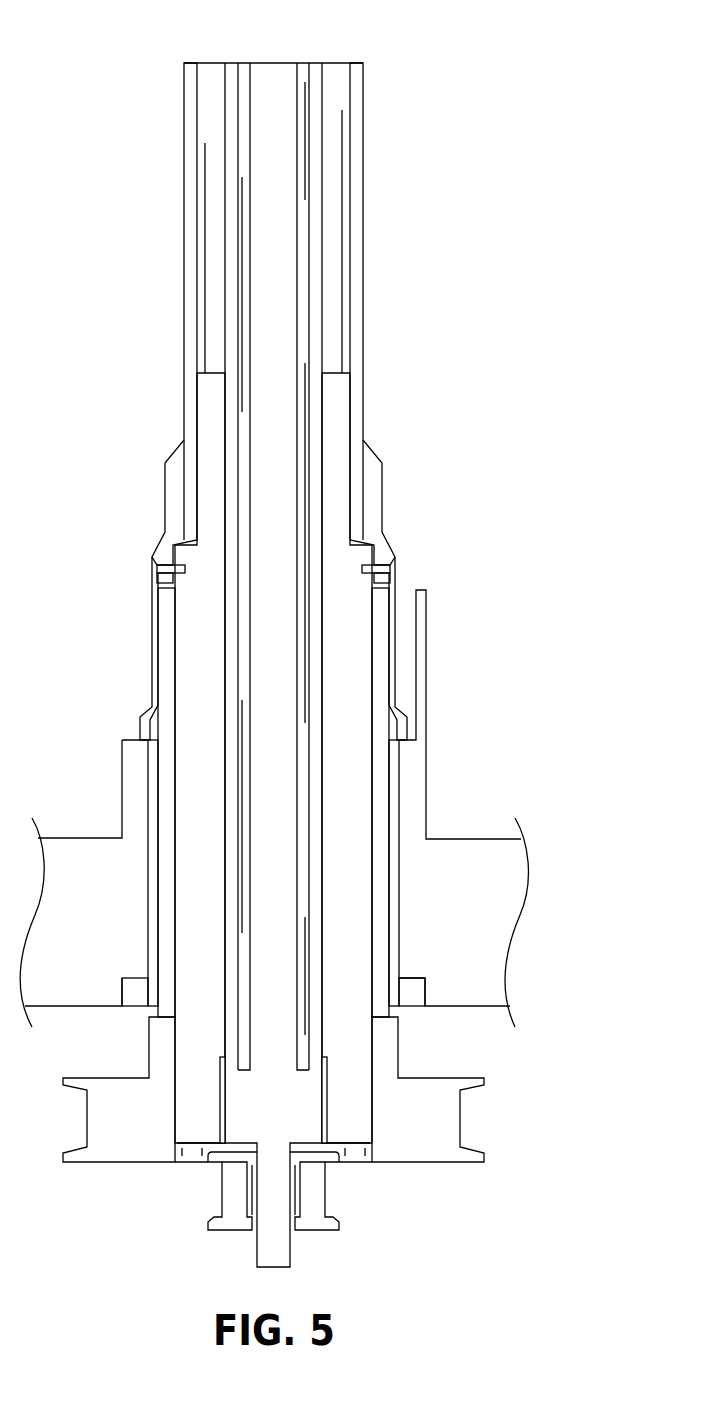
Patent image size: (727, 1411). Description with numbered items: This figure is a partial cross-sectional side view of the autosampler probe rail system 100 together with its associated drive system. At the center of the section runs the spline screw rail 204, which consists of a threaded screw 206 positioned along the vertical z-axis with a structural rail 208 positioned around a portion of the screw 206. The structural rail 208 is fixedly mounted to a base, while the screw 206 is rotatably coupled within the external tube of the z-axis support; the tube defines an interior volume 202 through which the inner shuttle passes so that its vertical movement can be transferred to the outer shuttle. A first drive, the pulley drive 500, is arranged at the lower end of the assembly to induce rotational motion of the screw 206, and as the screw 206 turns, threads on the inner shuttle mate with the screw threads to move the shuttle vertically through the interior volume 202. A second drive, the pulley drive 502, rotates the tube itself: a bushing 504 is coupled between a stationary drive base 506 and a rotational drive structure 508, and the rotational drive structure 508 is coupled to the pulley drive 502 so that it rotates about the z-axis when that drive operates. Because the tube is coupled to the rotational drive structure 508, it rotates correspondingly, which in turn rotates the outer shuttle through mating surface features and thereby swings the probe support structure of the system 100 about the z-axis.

The autosampler probe rail system 100 is at (505, 112).
The interior volume 202 is at (217, 213).
The spline screw rail 204 is at (300, 46).
The threaded screw 206 is at (266, 70).
The structural rail 208 is at (233, 132).
The pulley drive 500 is at (313, 1190).
The pulley drive 502 is at (128, 1152).
The bushing 504 is at (153, 743).
The stationary drive base 506 is at (90, 845).
The rotational drive structure 508 is at (188, 653).